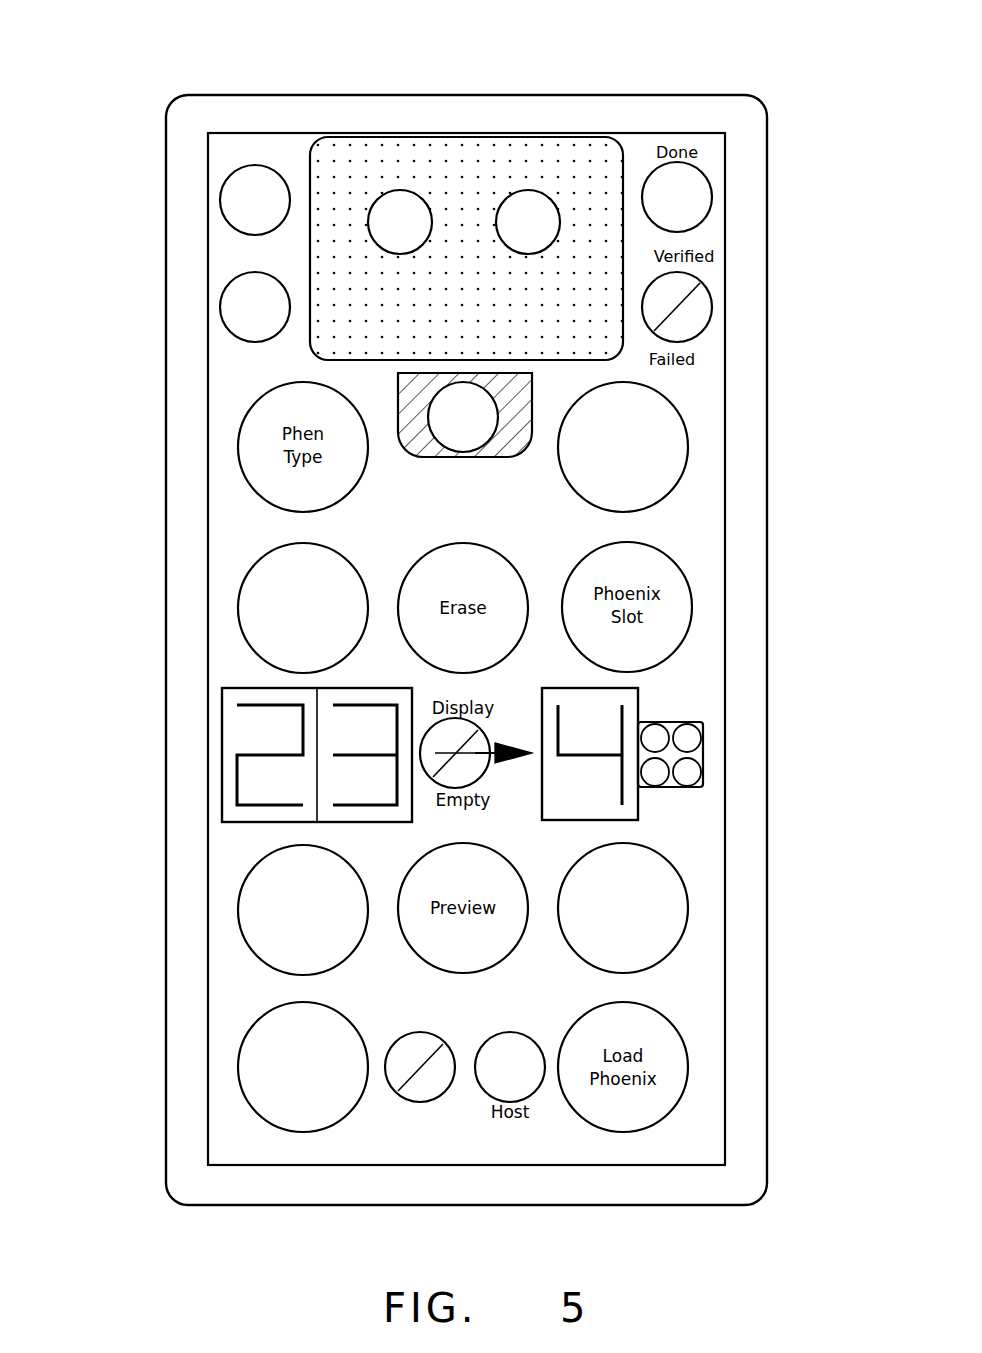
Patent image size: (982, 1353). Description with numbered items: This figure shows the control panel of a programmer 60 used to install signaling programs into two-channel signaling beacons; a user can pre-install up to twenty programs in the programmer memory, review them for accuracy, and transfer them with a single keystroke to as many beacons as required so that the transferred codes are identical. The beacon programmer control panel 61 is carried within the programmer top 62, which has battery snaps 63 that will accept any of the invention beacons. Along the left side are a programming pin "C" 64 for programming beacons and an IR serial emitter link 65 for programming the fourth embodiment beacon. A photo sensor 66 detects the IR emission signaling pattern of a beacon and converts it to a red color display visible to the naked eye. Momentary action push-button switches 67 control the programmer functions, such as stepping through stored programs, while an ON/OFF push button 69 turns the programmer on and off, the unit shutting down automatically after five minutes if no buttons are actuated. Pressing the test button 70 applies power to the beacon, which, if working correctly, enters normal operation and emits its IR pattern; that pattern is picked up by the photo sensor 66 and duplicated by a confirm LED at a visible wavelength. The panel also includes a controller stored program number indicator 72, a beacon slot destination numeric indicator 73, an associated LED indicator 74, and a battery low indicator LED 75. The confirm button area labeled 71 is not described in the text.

The programmer 60 is at (510, 87).
The beacon programmer control panel 61 is at (711, 497).
The programmer top 62 is at (390, 93).
The battery snaps 63 is at (527, 187).
The programming pin "C" 64 is at (225, 187).
The IR serial emitter link 65 is at (228, 340).
The photo sensor 66 is at (477, 417).
The momentary action push-button switches 67 is at (410, 566).
The ON/OFF push button 69 is at (266, 1122).
The test button 70 is at (686, 428).
The confirm button 71 is at (471, 398).
The controller stored program number indicator 72 is at (243, 808).
The beacon slot destination numeric indicator 73 is at (639, 710).
The LED indicator 74 is at (700, 760).
The battery low indicator LED 75 is at (412, 1102).